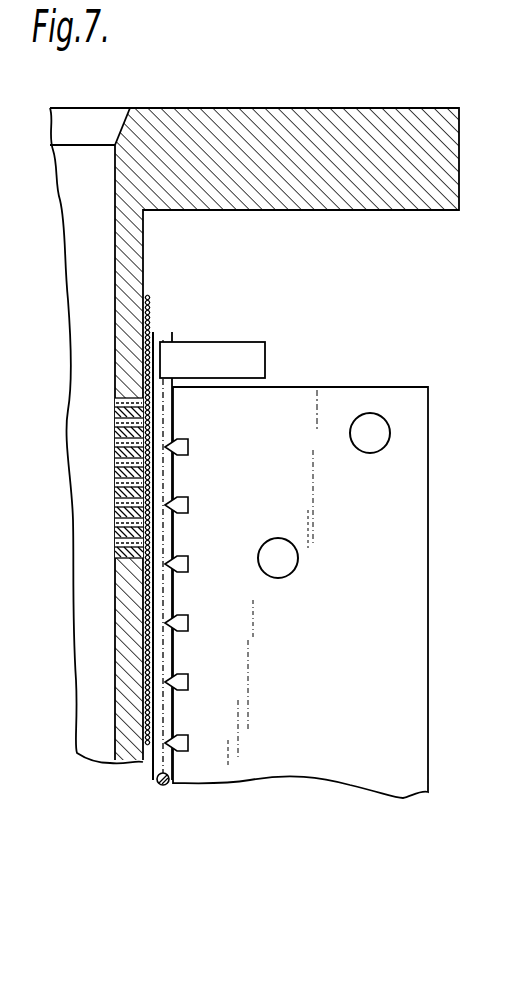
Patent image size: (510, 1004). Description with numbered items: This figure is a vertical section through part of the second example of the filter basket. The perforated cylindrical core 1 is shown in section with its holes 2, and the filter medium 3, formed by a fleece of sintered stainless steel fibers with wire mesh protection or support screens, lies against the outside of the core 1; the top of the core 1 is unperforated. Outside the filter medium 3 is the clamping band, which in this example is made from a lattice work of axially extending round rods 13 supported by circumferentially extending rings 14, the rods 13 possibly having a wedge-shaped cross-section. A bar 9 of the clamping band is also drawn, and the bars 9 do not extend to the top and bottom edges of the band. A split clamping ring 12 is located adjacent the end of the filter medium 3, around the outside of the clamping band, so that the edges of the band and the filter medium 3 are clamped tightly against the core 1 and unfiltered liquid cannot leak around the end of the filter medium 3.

The perforated cylindrical core 1 is at (120, 333).
The holes 2 is at (115, 405).
The filter medium 3 is at (147, 297).
The bars 9 is at (410, 493).
The split clamping rings 12 is at (245, 352).
The axially extending round rods 13 is at (160, 338).
The circumferentially extending rings 14 is at (188, 447).